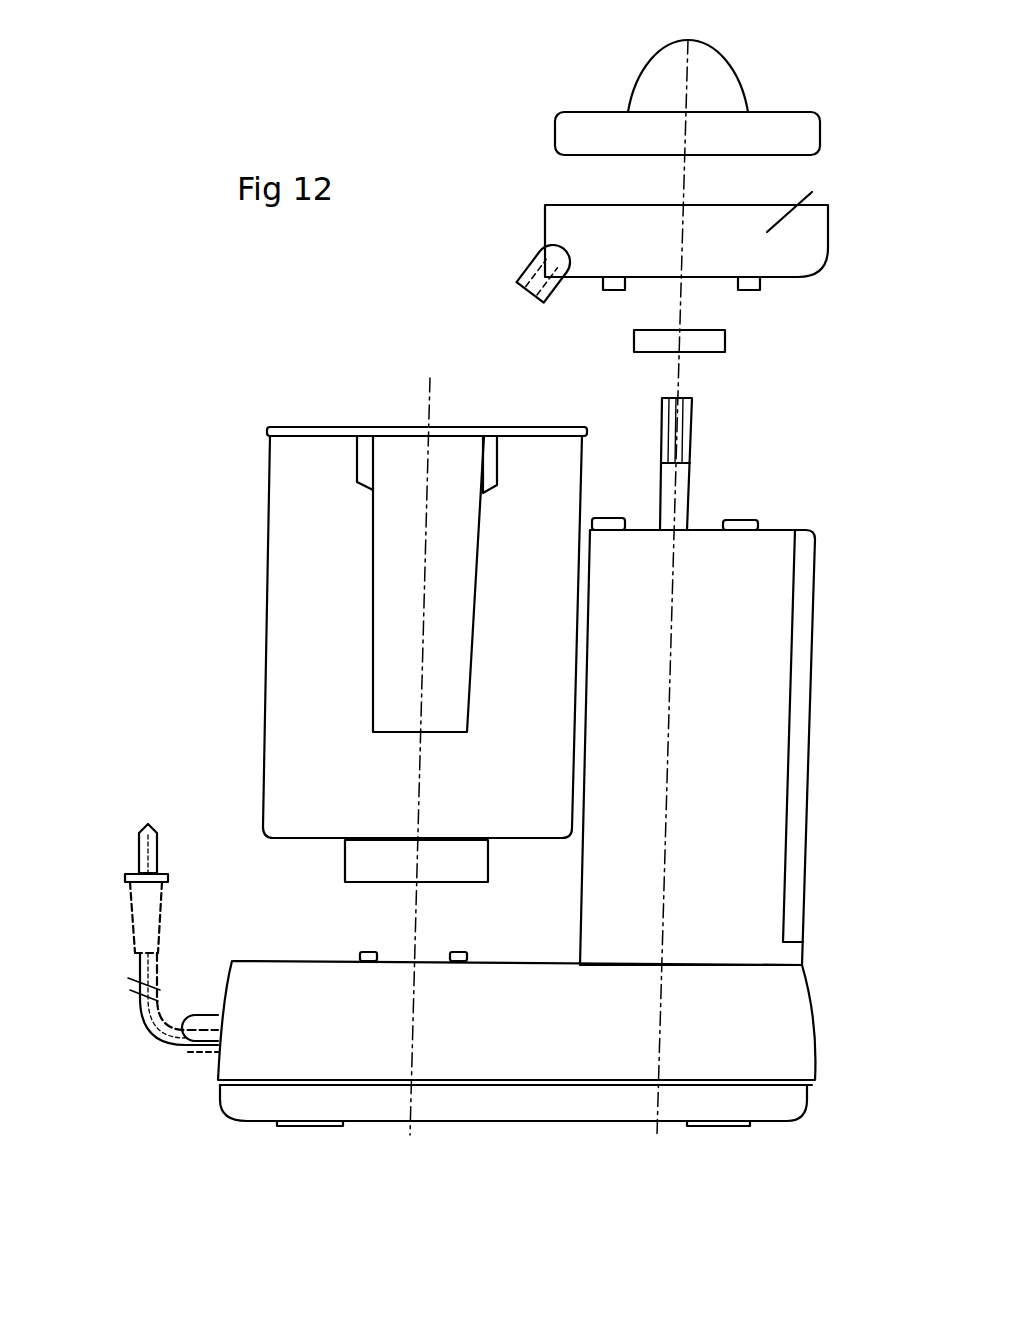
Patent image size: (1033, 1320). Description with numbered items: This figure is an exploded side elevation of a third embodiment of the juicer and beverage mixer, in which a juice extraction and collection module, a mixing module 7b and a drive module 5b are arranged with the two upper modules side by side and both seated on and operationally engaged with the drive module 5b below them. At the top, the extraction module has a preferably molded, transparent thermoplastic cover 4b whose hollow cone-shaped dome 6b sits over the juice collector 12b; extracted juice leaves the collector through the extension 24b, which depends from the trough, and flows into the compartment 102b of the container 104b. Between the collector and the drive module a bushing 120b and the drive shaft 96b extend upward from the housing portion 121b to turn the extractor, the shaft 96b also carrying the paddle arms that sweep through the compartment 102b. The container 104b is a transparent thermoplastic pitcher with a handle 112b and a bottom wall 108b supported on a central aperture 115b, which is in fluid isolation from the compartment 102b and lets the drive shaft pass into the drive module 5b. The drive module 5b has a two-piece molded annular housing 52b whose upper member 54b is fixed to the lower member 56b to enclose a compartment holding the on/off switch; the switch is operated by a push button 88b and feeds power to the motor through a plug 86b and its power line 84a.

The cover 4b is at (750, 58).
The hollow cone-shaped dome 6b is at (640, 80).
The juice collector 12b is at (790, 130).
The extension 24b is at (527, 262).
The coupling disc 120b is at (713, 342).
The shank 96b is at (682, 478).
The motor housing 121b is at (742, 572).
The compartment 102b is at (545, 463).
The container 104b is at (258, 682).
The bottom wall 108b is at (310, 832).
The handle 112b is at (408, 490).
The aperture 115b is at (468, 883).
The mixing module 7b is at (180, 583).
The upper housing portion 54b is at (777, 998).
The housing 52b is at (815, 1013).
The drive module 5b is at (850, 1035).
The lower member 56b is at (790, 1110).
The plug 86b is at (138, 872).
The drain tube 84a is at (137, 1013).
The push button 88b is at (198, 1028).